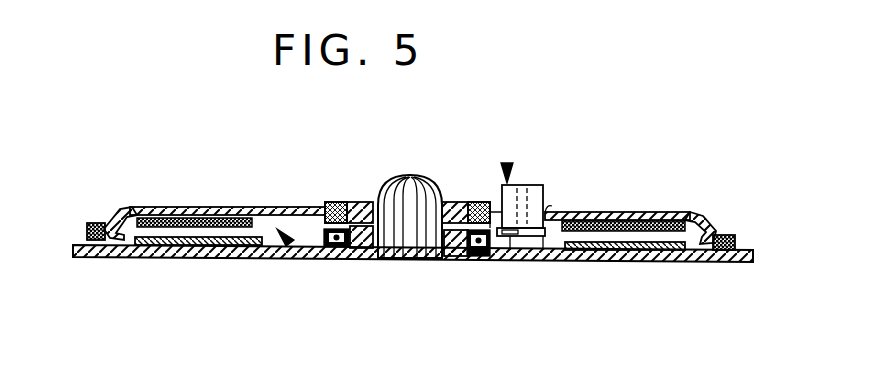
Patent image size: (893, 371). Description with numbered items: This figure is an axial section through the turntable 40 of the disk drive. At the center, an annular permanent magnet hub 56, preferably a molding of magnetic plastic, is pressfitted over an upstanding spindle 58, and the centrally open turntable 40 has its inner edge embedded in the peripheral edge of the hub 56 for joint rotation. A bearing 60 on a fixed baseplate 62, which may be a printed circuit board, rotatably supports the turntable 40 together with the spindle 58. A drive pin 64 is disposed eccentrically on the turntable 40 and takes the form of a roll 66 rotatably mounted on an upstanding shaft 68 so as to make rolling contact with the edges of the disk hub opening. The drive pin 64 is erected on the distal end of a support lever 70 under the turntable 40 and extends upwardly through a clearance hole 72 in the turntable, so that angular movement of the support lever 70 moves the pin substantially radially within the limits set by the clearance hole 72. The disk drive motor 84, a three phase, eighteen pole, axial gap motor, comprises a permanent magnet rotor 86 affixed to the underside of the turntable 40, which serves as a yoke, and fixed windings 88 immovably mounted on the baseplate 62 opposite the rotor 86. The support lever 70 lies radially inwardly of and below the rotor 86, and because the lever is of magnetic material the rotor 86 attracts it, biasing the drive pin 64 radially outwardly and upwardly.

The turntable 40 is at (645, 212).
The permanent magnet hub 56 is at (452, 203).
The spindle 58 is at (400, 176).
The bearing 60 is at (480, 257).
The baseplate 62 is at (700, 263).
The drive pin 64 is at (504, 162).
The roll 66 is at (534, 185).
The shaft 68 is at (516, 256).
The support lever 70 is at (552, 256).
The clearance hole 72 is at (550, 210).
The disk drive motor 84 is at (289, 242).
The permanent magnet rotor 86 is at (200, 207).
The fixed windings 88 is at (148, 246).